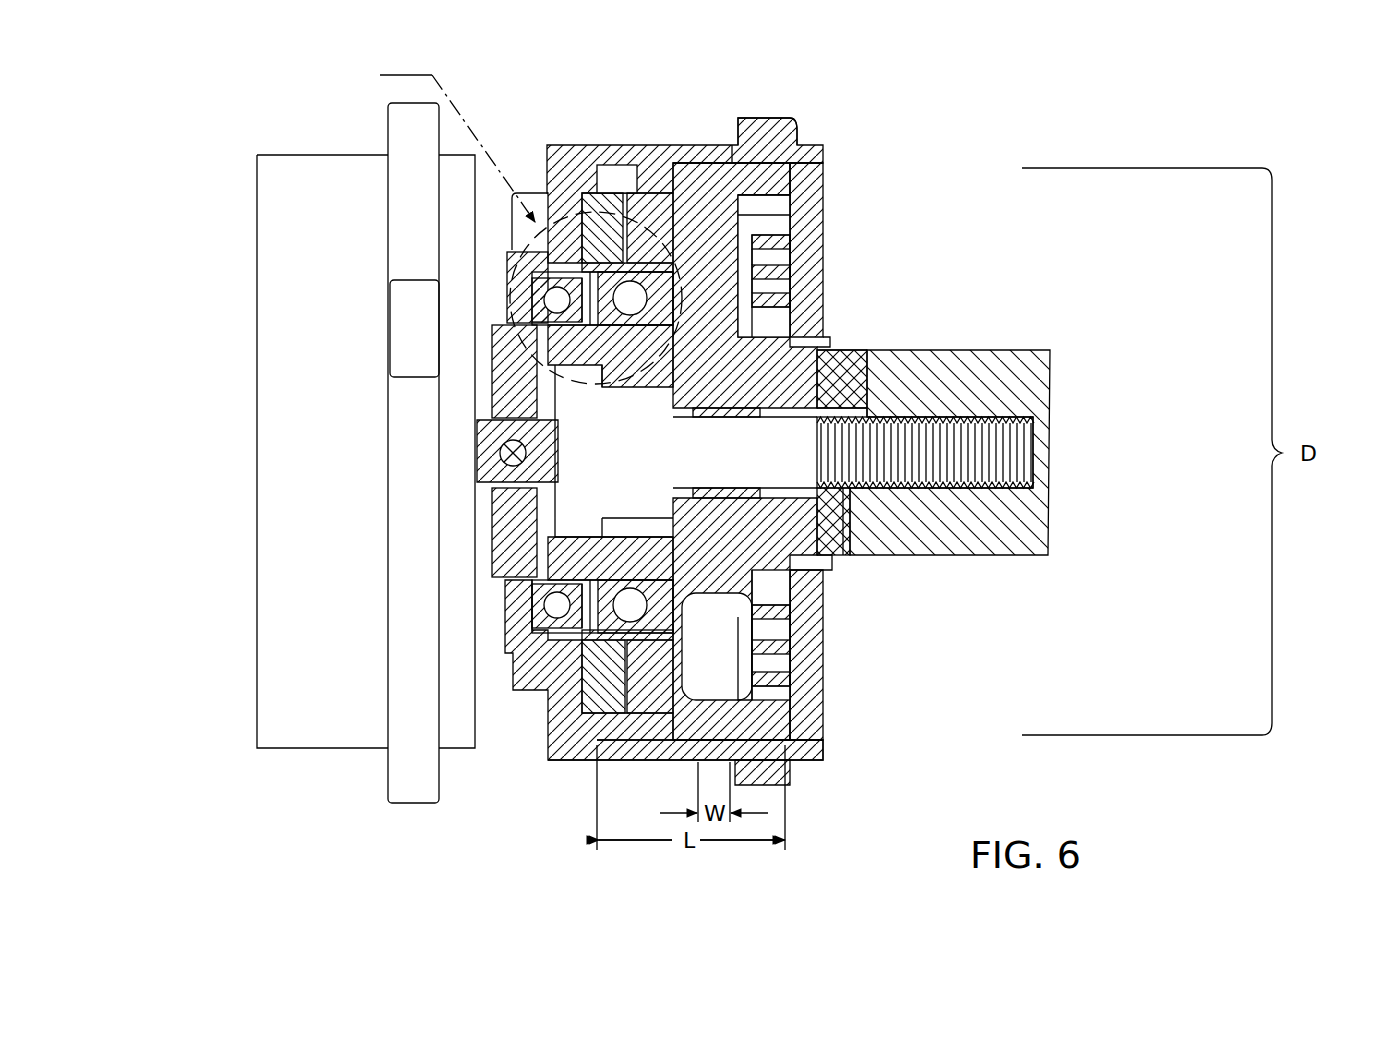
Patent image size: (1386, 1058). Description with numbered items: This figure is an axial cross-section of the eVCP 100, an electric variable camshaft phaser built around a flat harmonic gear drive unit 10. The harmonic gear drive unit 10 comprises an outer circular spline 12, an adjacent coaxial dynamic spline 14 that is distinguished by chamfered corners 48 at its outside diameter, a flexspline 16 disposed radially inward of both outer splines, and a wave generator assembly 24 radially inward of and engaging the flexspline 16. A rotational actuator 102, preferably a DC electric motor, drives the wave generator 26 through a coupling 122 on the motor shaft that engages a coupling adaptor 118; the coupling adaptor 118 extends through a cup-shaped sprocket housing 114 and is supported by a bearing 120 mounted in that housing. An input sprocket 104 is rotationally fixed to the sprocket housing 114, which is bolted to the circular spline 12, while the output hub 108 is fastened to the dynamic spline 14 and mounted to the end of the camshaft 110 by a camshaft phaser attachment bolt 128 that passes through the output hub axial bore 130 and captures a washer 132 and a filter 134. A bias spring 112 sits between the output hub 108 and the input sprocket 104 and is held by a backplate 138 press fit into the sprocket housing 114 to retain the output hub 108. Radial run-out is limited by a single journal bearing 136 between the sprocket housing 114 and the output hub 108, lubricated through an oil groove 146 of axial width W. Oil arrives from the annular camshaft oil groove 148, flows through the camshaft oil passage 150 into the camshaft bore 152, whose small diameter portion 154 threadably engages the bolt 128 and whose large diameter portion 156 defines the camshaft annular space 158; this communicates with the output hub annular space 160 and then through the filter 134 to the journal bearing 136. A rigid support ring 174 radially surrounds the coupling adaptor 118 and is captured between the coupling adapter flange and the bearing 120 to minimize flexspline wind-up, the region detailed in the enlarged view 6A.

The eVCP 100 is at (968, 103).
The rotational actuator 102 is at (272, 690).
The input sprocket 104 is at (788, 150).
The output hub 108 is at (770, 150).
The camshaft 110 is at (1028, 556).
The bias spring 112 is at (770, 242).
The sprocket housing 114 is at (808, 145).
The coupling adaptor 118 is at (530, 353).
The bearing 120 is at (537, 277).
The coupling 122 is at (495, 387).
The camshaft phaser attachment bolt 128 is at (1010, 380).
The output hub axial bore 130 is at (773, 475).
The washer 132 is at (732, 165).
The filter 134 is at (780, 337).
The journal bearing 136 is at (720, 740).
The backplate 138 is at (826, 185).
The oil groove 146 is at (668, 722).
The annular camshaft oil groove 148 is at (843, 555).
The camshaft oil passage 150 is at (850, 557).
The camshaft bore 152 is at (868, 498).
The small diameter portion 154 is at (975, 490).
The large diameter portion 156 is at (862, 497).
The camshaft annular space 158 is at (957, 427).
The output hub annular space 160 is at (850, 410).
The support ring 174 is at (485, 437).
The harmonic gear drive unit 10 is at (620, 162).
The circular spline 12 is at (555, 175).
The dynamic spline 14 is at (655, 215).
The flexspline 16 is at (583, 262).
The wave generator assembly 24 is at (640, 280).
The wave generator 26 is at (640, 555).
The chamfered corners 48 is at (625, 205).
The detail view area 6A is at (500, 221).